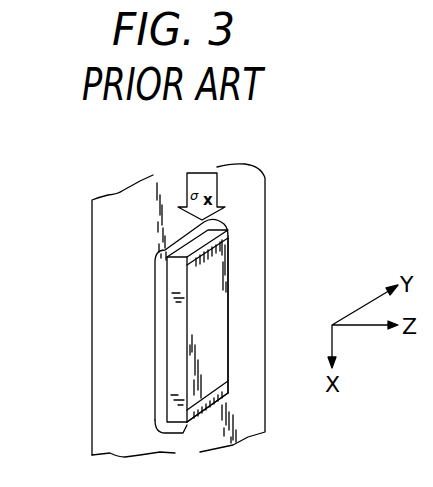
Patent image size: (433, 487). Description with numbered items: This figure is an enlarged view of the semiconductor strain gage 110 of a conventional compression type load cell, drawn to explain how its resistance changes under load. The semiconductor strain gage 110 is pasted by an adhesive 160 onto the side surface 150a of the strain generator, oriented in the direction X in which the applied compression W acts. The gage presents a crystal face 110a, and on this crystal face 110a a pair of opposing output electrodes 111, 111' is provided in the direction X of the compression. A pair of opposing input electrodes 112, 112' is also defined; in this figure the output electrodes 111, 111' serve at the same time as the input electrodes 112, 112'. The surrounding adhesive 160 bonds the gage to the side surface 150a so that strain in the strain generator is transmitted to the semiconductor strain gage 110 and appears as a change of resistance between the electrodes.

The side surface 150a is at (107, 246).
The adhesive 160 is at (156, 330).
The semiconductor strain gage 110 is at (180, 382).
The crystal face 110a is at (212, 295).
The output electrode 111 is at (254, 223).
The input electrode 112 is at (231, 235).
The output electrode 111' is at (272, 407).
The input electrode 112' is at (230, 407).